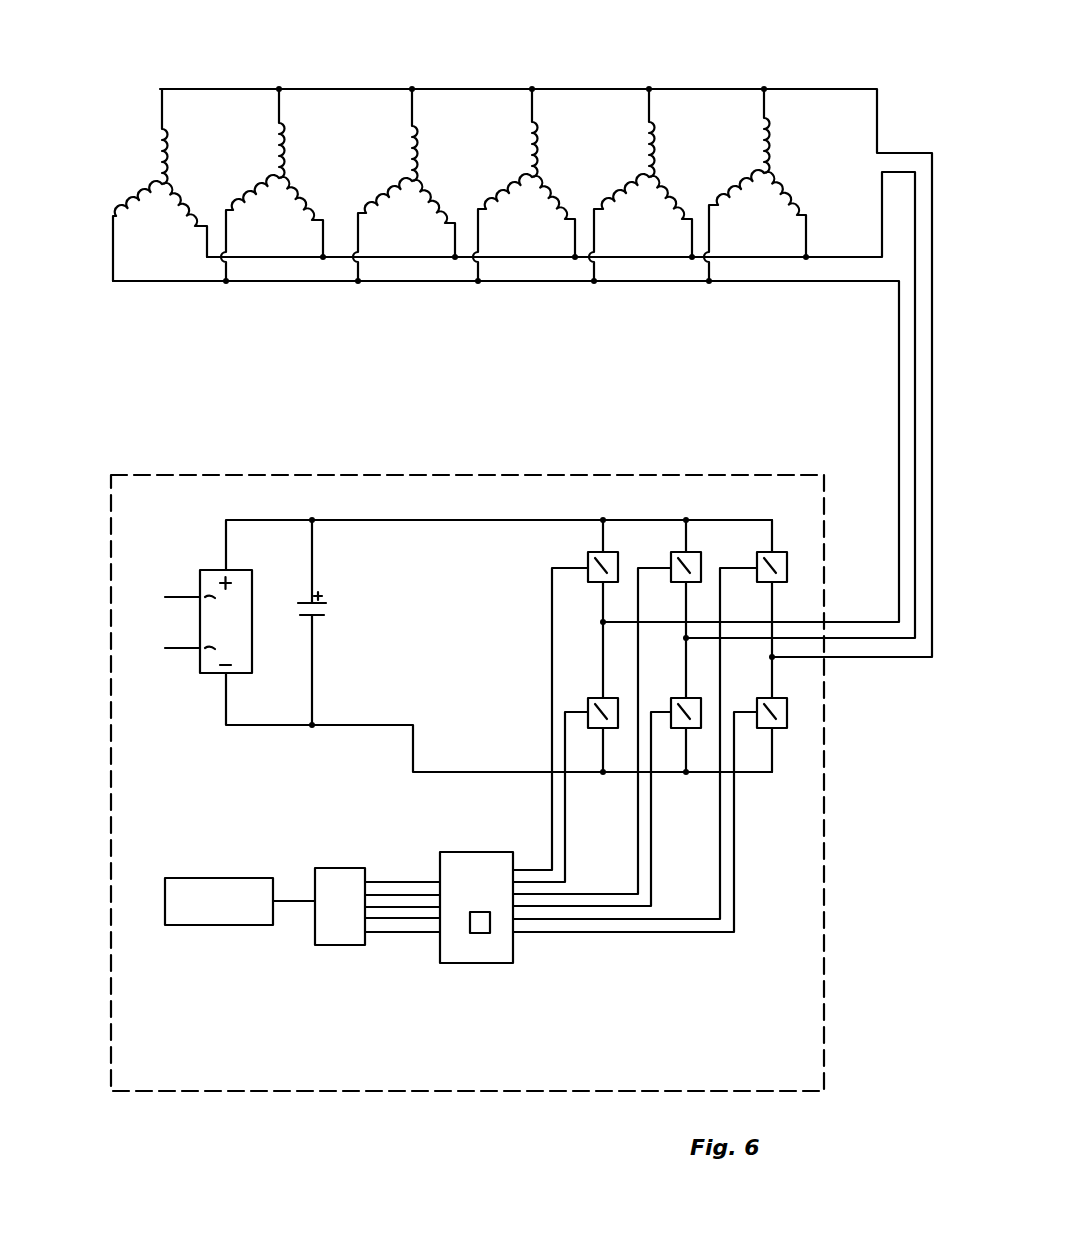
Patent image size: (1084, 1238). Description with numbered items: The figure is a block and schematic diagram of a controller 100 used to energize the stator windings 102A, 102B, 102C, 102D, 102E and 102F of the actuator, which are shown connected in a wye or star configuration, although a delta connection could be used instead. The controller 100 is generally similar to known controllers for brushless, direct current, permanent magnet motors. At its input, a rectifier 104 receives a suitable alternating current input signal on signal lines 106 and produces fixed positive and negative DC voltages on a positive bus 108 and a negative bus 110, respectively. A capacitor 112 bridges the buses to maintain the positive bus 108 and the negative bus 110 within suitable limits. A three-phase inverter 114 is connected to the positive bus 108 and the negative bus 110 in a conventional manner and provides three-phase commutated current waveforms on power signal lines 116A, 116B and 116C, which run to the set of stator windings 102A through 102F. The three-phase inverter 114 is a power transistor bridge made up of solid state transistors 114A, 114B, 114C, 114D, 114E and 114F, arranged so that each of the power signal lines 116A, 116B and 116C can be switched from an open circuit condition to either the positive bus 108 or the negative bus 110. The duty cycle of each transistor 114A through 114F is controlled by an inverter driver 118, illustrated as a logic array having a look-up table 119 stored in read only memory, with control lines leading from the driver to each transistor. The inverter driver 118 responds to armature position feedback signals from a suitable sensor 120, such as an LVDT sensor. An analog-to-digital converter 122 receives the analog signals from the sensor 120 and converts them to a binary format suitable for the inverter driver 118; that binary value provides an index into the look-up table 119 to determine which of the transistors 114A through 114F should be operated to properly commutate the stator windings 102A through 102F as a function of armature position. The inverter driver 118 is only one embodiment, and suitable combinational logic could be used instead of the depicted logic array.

The controller 100 is at (676, 466).
The stator winding 102A is at (745, 216).
The stator winding 102B is at (637, 211).
The stator winding 102C is at (526, 207).
The stator winding 102D is at (400, 214).
The stator winding 102E is at (273, 210).
The stator winding 102F is at (162, 216).
The rectifier 104 is at (273, 551).
The signal lines 106 is at (178, 645).
The positive bus 108 is at (374, 520).
The negative bus 110 is at (350, 725).
The capacitor 112 is at (336, 597).
The three-phase inverter 114 is at (760, 500).
The solid state transistor 114A is at (588, 557).
The solid state transistor 114B is at (672, 559).
The solid state transistor 114C is at (756, 559).
The solid state transistor 114D is at (588, 701).
The solid state transistor 114E is at (679, 728).
The solid state transistor 114F is at (787, 718).
The power signal line 116A is at (898, 362).
The power signal line 116B is at (870, 261).
The power signal line 116C is at (858, 88).
The inverter driver 118 is at (452, 852).
The look-up table 119 is at (479, 934).
The sensor 120 is at (180, 878).
The analog-to-digital converter 122 is at (325, 868).